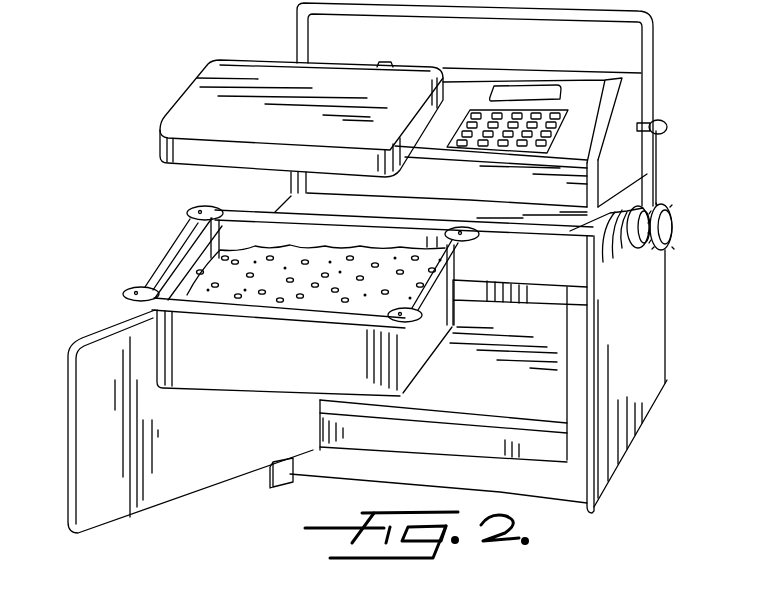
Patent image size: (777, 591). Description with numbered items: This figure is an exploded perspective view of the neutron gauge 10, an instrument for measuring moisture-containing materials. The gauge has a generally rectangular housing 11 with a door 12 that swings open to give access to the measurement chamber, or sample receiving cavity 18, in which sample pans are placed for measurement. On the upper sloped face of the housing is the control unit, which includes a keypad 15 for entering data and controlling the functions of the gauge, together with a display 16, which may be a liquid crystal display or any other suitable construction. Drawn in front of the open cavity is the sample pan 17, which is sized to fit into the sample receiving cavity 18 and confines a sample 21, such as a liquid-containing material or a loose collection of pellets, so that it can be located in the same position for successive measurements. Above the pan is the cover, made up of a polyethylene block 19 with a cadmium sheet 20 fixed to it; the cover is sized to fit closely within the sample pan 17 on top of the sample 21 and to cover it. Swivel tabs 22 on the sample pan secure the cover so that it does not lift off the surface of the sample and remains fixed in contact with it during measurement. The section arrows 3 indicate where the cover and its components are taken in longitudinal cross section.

The section line 3- 3 is at (253, 75).
The neutron gauge 10 is at (690, 60).
The housing 11 is at (653, 348).
The door 12 is at (97, 437).
The keypad 15 is at (473, 110).
The display 16 is at (532, 97).
The sample pan 17 is at (178, 253).
The sample receiving cavity 18 is at (473, 370).
The polyethylene block 19 is at (200, 107).
The cadmium sheet 20 is at (160, 160).
The sample 21 is at (247, 256).
The swivel tabs 22 is at (140, 288).